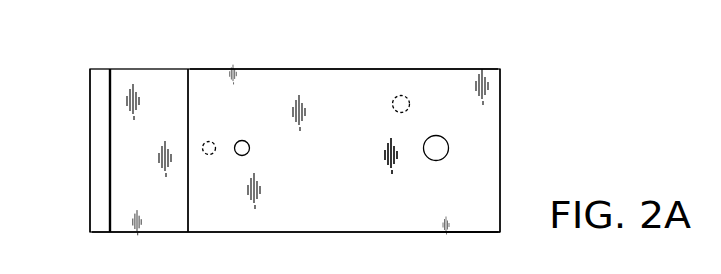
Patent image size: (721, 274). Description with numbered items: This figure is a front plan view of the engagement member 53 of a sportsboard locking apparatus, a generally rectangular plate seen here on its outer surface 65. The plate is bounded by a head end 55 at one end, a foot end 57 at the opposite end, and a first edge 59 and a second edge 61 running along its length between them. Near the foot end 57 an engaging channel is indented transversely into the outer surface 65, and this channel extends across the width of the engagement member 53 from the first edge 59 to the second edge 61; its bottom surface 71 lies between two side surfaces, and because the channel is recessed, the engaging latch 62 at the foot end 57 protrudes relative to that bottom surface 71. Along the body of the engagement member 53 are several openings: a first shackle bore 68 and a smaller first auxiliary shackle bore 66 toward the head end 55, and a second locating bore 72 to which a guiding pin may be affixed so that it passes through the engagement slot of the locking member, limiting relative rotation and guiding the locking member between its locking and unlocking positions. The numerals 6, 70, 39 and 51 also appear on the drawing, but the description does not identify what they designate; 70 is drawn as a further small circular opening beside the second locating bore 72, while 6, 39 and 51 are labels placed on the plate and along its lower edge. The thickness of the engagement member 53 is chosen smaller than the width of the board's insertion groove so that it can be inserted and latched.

The panel 6 is at (168, 88).
The engaging latch 62 is at (110, 82).
The bottom surface 71 is at (148, 82).
The second locating bore 72 is at (210, 141).
The hole 70 is at (247, 140).
The first edge 59 is at (318, 68).
The outer surface 65 is at (358, 92).
The first auxiliary shackle bore 66 is at (408, 97).
The first shackle bore 68 is at (448, 139).
The head end 55 is at (500, 116).
The foot end 57 is at (90, 125).
The engagement member 53 is at (333, 161).
The bottom edge 39 is at (401, 273).
The second edge 61 is at (480, 232).
The bottom edge portion 51 is at (450, 253).